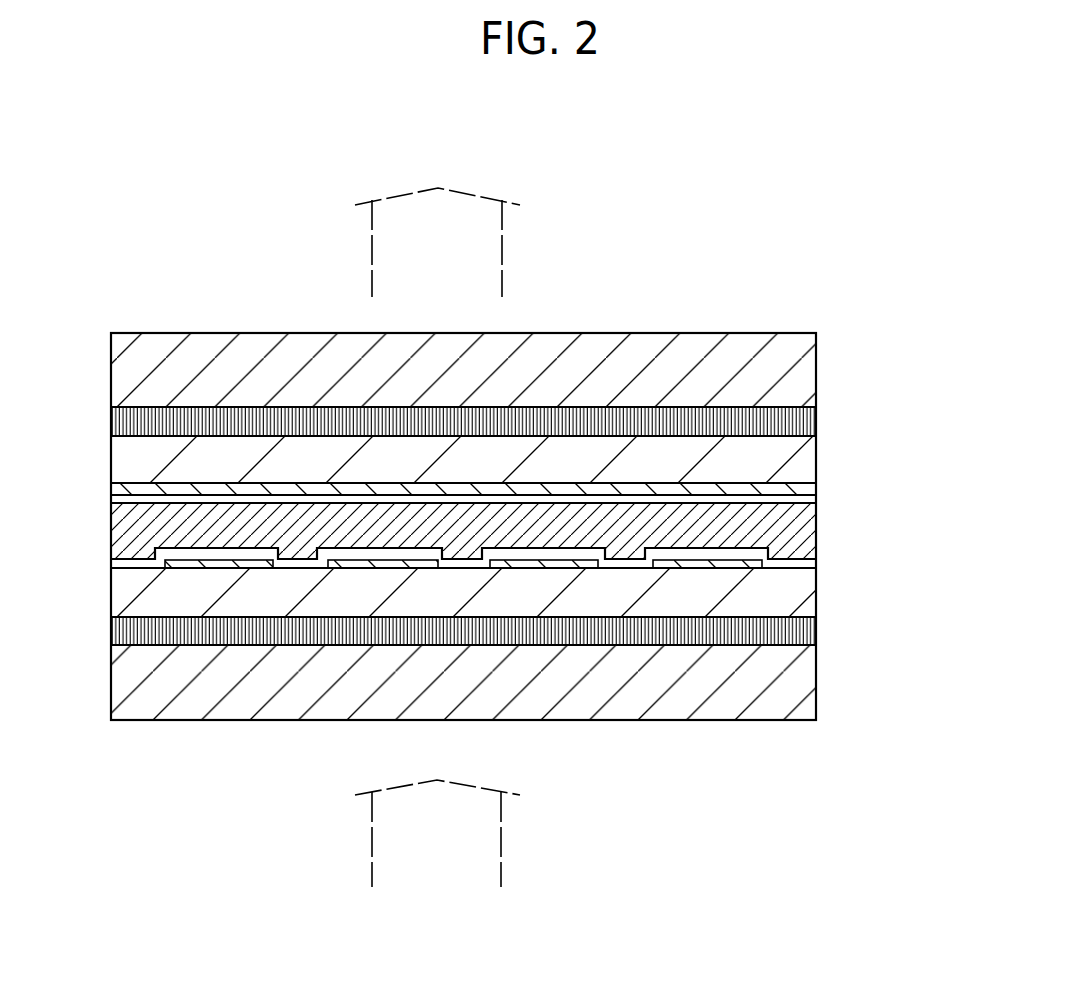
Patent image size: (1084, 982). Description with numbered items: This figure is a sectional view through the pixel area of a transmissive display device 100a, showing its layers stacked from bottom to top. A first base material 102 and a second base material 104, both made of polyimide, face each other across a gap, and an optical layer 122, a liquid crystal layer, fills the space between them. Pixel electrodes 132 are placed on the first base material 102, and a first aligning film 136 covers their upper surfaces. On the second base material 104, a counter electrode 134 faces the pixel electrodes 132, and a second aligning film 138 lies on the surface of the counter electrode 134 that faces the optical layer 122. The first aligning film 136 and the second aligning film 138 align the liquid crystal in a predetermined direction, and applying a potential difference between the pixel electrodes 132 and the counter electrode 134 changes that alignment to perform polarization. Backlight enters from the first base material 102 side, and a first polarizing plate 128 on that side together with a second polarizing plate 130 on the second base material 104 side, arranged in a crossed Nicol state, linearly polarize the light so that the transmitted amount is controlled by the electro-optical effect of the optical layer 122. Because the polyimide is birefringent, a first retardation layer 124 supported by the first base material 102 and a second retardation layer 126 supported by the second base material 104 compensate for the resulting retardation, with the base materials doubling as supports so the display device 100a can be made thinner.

The transmissive display device 100a is at (667, 257).
The second polarizing plate 130 is at (805, 365).
The second retardation layer 126 is at (805, 425).
The second base material 104 is at (805, 462).
The counter electrode 134 is at (233, 490).
The second aligning film 138 is at (167, 500).
The optical layer 122 is at (807, 532).
The first aligning film 136 is at (127, 563).
The pixel electrodes 132 is at (215, 563).
The first base material 102 is at (805, 596).
The first retardation layer 124 is at (805, 634).
The first polarizing plate 128 is at (805, 678).